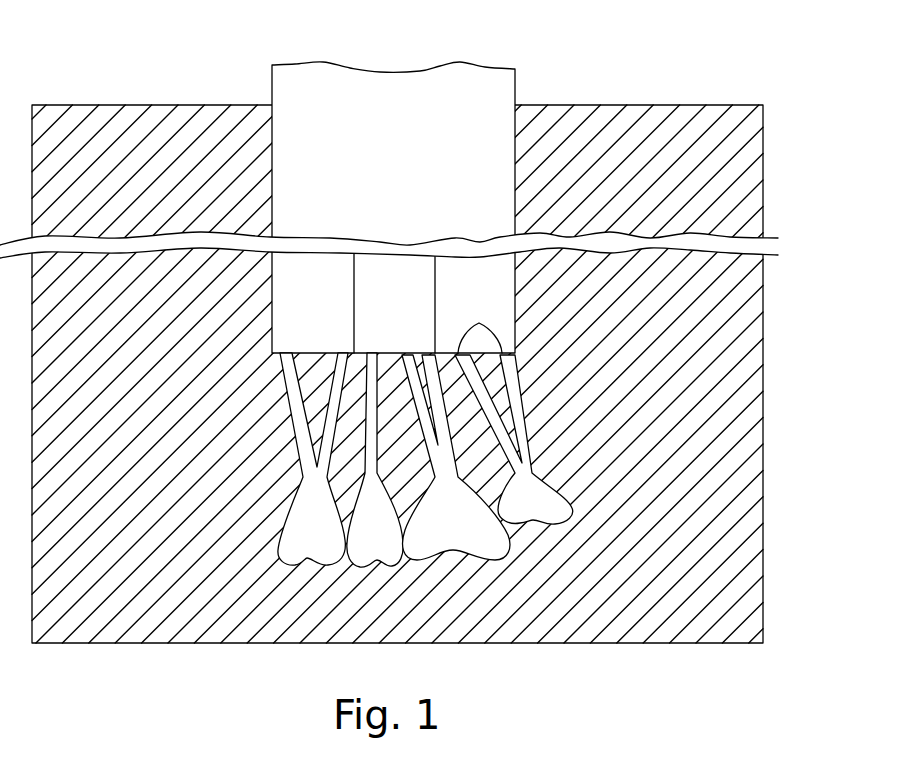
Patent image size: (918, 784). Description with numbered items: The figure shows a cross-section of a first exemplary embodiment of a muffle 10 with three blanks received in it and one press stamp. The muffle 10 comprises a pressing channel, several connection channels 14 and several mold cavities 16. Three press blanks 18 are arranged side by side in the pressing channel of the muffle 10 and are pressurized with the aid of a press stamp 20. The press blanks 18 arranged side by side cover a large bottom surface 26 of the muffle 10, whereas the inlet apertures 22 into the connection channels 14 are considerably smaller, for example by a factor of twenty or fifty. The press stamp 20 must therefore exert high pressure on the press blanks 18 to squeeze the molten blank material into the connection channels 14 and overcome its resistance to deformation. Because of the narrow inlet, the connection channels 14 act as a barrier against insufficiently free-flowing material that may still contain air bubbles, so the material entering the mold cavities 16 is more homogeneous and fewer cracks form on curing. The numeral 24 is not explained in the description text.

The muffle 10 is at (783, 85).
The connection channels 14 is at (522, 415).
The mold cavities 16 is at (568, 460).
The press blanks 18 is at (395, 240).
The press stamp 20 is at (272, 83).
The inlet apertures 22 is at (479, 324).
The fracture 24 is at (527, 470).
The bottom surface 26 is at (311, 345).